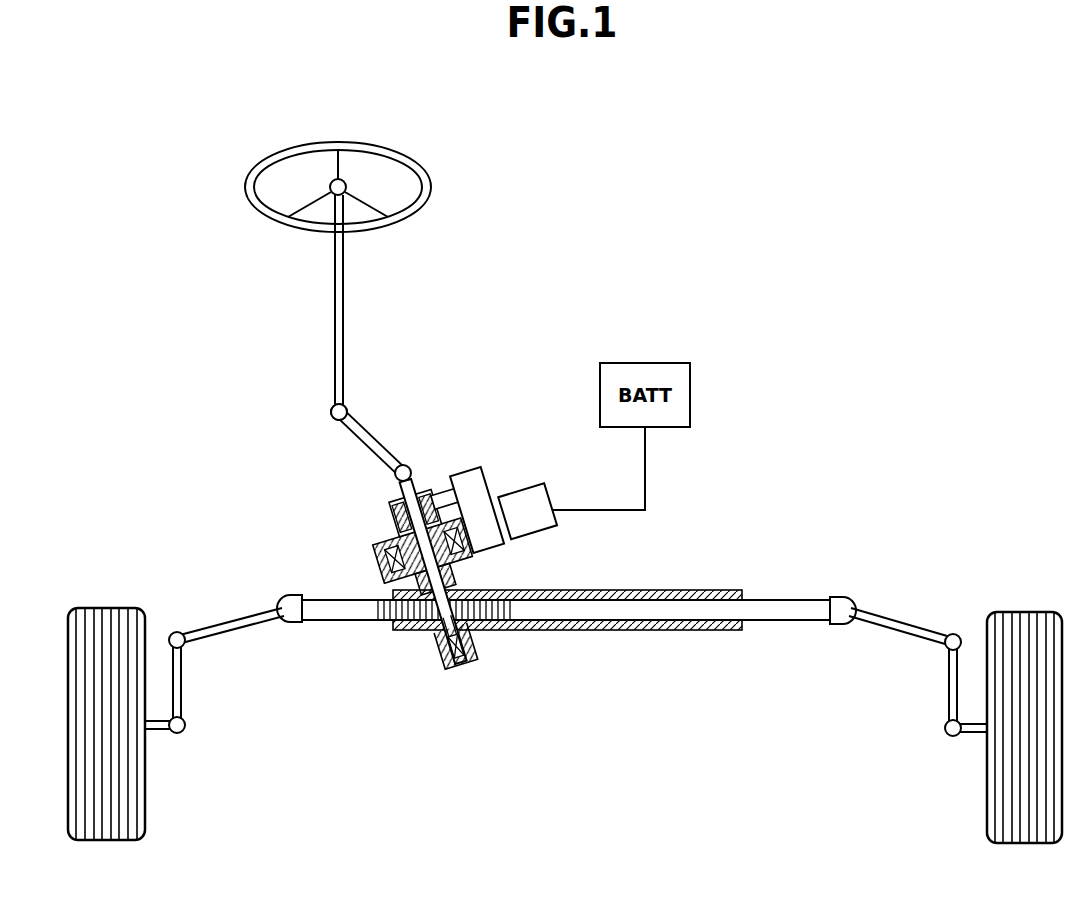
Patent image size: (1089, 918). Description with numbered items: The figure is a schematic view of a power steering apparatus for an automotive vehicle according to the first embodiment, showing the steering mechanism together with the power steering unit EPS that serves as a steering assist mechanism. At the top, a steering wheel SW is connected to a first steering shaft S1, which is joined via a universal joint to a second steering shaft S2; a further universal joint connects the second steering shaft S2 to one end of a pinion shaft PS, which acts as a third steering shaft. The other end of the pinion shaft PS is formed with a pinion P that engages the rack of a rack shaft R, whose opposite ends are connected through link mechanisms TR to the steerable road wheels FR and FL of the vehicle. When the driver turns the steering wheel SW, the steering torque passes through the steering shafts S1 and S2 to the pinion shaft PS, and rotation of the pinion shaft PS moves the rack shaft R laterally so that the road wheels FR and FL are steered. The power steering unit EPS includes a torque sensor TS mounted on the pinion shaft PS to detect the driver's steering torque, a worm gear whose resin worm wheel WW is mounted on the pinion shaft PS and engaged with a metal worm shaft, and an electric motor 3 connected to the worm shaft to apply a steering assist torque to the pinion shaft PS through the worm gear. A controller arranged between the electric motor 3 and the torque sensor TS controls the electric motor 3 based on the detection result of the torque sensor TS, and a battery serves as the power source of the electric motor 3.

The steering wheel SW is at (433, 187).
The first steering shaft S1 is at (334, 305).
The second steering shaft S2 is at (350, 432).
The torque sensor TS is at (392, 498).
The worm wheel WW is at (372, 560).
The pinion shaft PS is at (462, 573).
The pinion P is at (437, 636).
The rack shaft R is at (553, 630).
The power steering unit EPS is at (536, 462).
The electric motor 3 is at (549, 490).
The steerable road wheel FR is at (108, 607).
The steerable road wheel FL is at (1022, 611).
The link mechanism TR is at (284, 626).